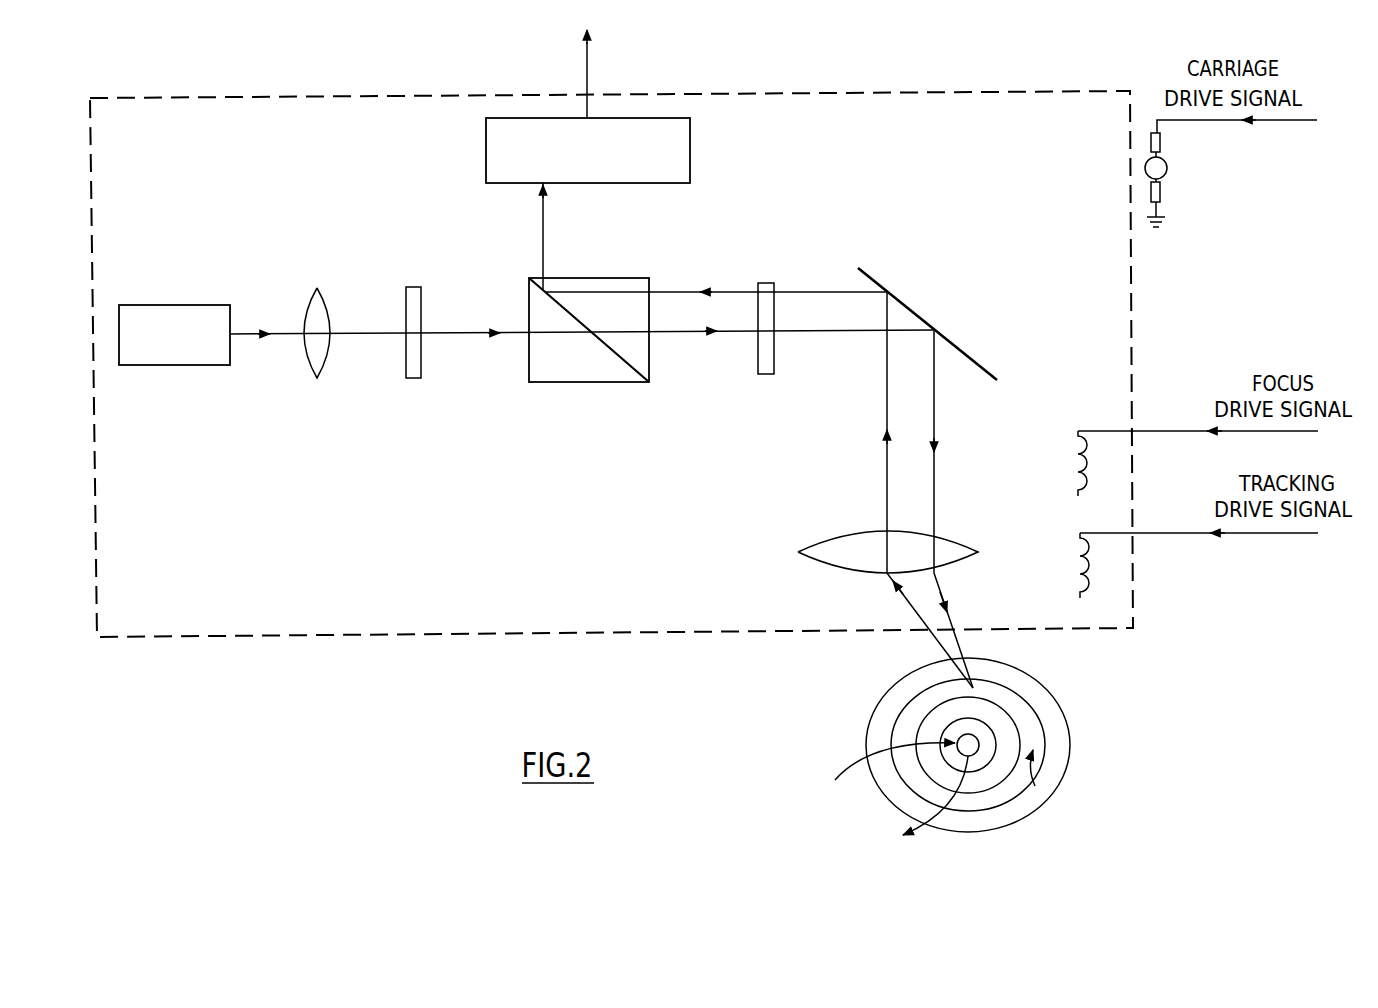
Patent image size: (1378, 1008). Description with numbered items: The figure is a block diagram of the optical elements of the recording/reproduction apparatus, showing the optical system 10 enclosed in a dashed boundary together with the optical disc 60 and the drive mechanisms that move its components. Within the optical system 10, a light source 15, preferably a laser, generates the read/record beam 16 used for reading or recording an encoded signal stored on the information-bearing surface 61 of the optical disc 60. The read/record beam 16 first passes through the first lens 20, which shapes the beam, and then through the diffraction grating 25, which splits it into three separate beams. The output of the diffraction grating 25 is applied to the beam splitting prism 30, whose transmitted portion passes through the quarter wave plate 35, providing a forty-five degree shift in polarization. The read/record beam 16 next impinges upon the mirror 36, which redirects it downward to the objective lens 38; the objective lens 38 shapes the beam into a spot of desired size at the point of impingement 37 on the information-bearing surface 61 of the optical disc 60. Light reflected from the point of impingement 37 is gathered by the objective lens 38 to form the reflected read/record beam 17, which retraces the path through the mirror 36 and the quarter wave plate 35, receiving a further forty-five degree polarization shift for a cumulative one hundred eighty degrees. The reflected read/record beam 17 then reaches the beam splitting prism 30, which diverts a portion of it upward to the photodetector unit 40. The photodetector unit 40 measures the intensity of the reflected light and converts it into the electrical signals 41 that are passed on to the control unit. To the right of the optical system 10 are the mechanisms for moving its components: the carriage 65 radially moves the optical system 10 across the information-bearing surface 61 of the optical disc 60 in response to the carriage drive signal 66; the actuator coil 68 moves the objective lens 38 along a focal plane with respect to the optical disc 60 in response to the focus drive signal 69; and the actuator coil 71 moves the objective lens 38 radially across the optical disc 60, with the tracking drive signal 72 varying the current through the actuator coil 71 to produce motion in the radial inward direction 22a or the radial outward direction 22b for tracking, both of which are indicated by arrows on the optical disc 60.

The optical system 10 is at (180, 638).
The light source 15 is at (178, 305).
The read/record beam 16 is at (246, 330).
The reflected read/record beam 17 is at (544, 238).
The first lens 20 is at (324, 300).
The diffraction grating 25 is at (424, 302).
The beam splitting prism 30 is at (560, 382).
The quarter wave plate 35 is at (774, 350).
The mirror 36 is at (956, 346).
The point of impingement 37 is at (980, 684).
The objective lens 38 is at (846, 560).
The photodetector unit 40 is at (690, 154).
The electrical signals 41 is at (588, 64).
The optical disc 60 is at (1065, 717).
The information-bearing surface 61 is at (1035, 786).
The carriage 65 is at (1167, 170).
The carriage drive signal 66 is at (1173, 121).
The actuator coil 68 is at (1078, 447).
The focus drive signal 69 is at (1142, 431).
The actuator coil 71 is at (1083, 590).
The tracking drive signal 72 is at (1108, 533).
The radial inward direction 22a is at (835, 780).
The radial outward direction 22b is at (920, 820).